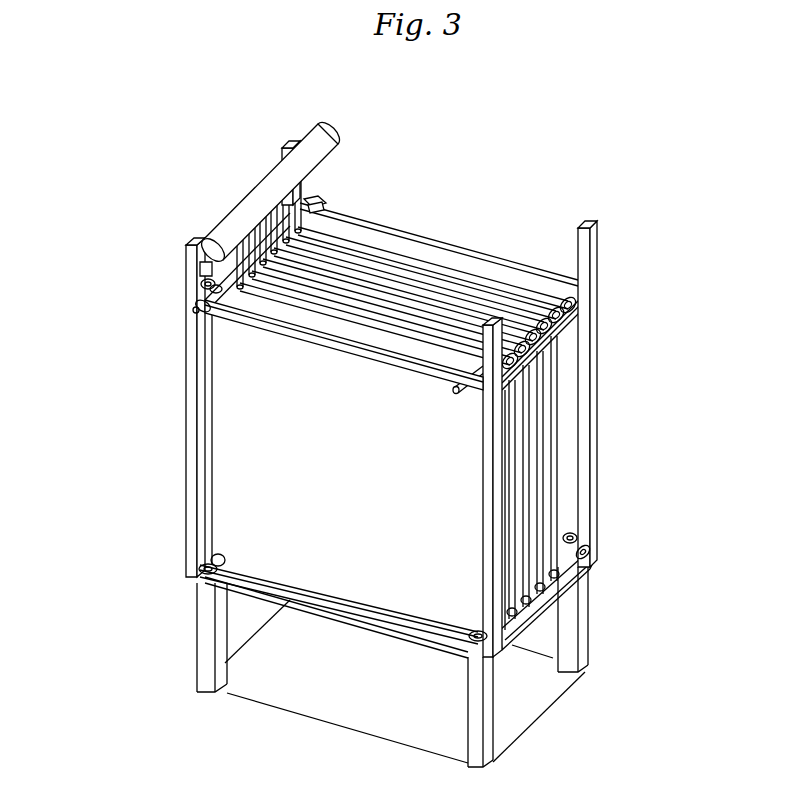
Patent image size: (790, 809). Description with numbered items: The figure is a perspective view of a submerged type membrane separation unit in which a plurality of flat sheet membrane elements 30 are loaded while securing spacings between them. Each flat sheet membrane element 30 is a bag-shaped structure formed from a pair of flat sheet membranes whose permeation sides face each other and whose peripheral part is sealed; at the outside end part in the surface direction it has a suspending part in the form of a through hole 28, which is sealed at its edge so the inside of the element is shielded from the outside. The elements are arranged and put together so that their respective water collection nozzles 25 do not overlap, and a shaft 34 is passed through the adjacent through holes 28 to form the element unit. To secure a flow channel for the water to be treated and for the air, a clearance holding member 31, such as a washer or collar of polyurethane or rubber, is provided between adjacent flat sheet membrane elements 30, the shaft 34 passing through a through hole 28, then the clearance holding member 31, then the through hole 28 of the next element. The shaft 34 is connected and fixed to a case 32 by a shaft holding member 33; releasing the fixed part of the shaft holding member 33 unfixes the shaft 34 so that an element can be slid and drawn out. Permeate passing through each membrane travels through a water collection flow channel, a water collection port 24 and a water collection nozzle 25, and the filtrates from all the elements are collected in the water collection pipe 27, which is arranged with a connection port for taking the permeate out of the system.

The water collection port 24 is at (345, 240).
The water collection nozzle 25 is at (318, 205).
The water collection pipe 27 is at (262, 216).
The through hole 28 is at (588, 573).
The flat sheet membrane element 30 is at (437, 263).
The clearance holding member 31 is at (205, 277).
The case 32 is at (192, 420).
The shaft holding member 33 is at (197, 282).
The shaft 34 is at (203, 312).